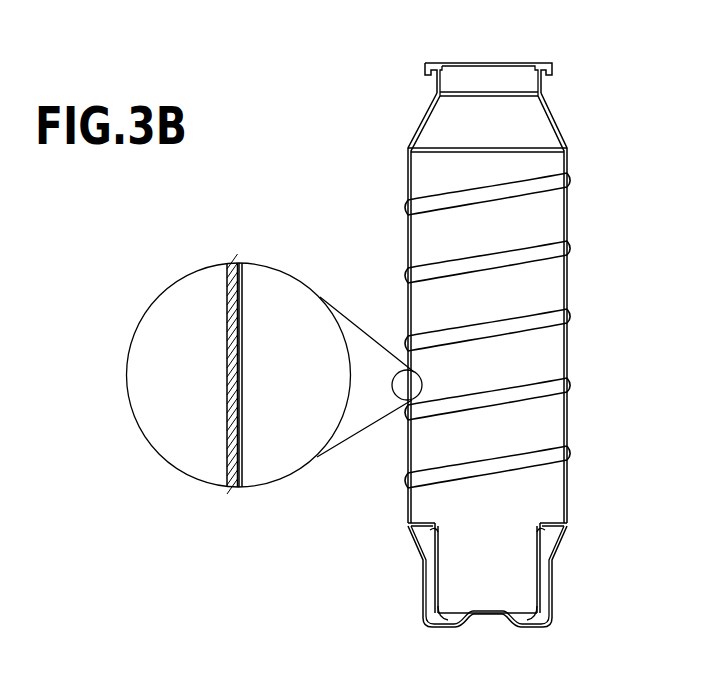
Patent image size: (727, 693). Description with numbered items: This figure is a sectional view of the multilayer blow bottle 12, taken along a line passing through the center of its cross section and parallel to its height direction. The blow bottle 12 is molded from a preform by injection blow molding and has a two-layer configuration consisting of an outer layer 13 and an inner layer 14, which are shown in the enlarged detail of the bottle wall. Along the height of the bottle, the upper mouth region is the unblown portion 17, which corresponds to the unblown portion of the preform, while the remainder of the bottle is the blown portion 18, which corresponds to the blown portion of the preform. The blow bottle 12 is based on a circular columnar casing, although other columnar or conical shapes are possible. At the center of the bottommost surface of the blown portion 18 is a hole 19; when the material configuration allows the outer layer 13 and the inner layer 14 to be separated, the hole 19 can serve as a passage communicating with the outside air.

The multilayer blow bottle 12 is at (549, 52).
The outer layer 13 is at (228, 401).
The inner layer 14 is at (237, 368).
The unblown portion 17 is at (540, 51).
The blown portion 18 is at (612, 97).
The hole 19 is at (485, 628).